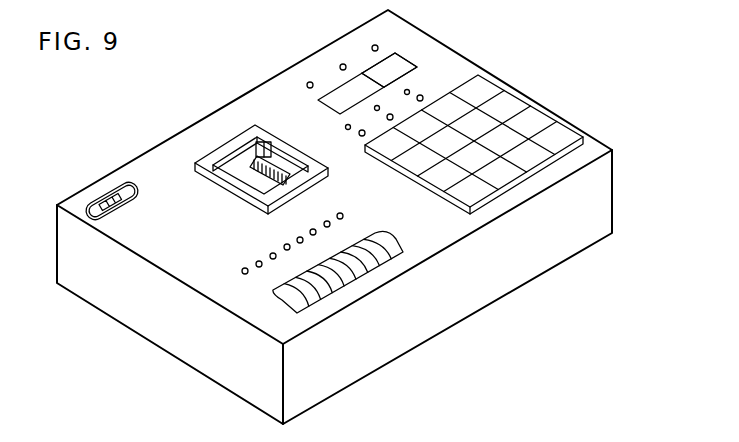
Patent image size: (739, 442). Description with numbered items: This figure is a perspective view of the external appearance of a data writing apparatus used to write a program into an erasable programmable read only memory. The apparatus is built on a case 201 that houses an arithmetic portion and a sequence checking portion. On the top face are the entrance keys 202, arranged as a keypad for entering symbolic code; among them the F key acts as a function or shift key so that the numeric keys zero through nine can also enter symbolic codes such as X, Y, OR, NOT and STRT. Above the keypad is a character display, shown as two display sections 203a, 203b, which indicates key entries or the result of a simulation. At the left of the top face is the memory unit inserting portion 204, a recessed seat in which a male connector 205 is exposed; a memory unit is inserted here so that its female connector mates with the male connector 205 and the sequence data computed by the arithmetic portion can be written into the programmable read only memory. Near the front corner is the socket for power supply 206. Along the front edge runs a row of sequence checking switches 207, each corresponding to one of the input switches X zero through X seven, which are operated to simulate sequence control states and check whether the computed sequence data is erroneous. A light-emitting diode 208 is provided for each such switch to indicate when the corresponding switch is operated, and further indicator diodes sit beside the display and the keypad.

The housing 201 is at (137, 303).
The entrance keys 202 is at (472, 153).
The display section 203a is at (327, 106).
The display section 203b is at (412, 64).
The memory unit inserting portion 204 is at (242, 168).
The male connector 205 is at (268, 142).
The socket for power supply 206 is at (100, 205).
The sequence checking switches 207 is at (360, 268).
The light-emitting diode 208 is at (307, 86).